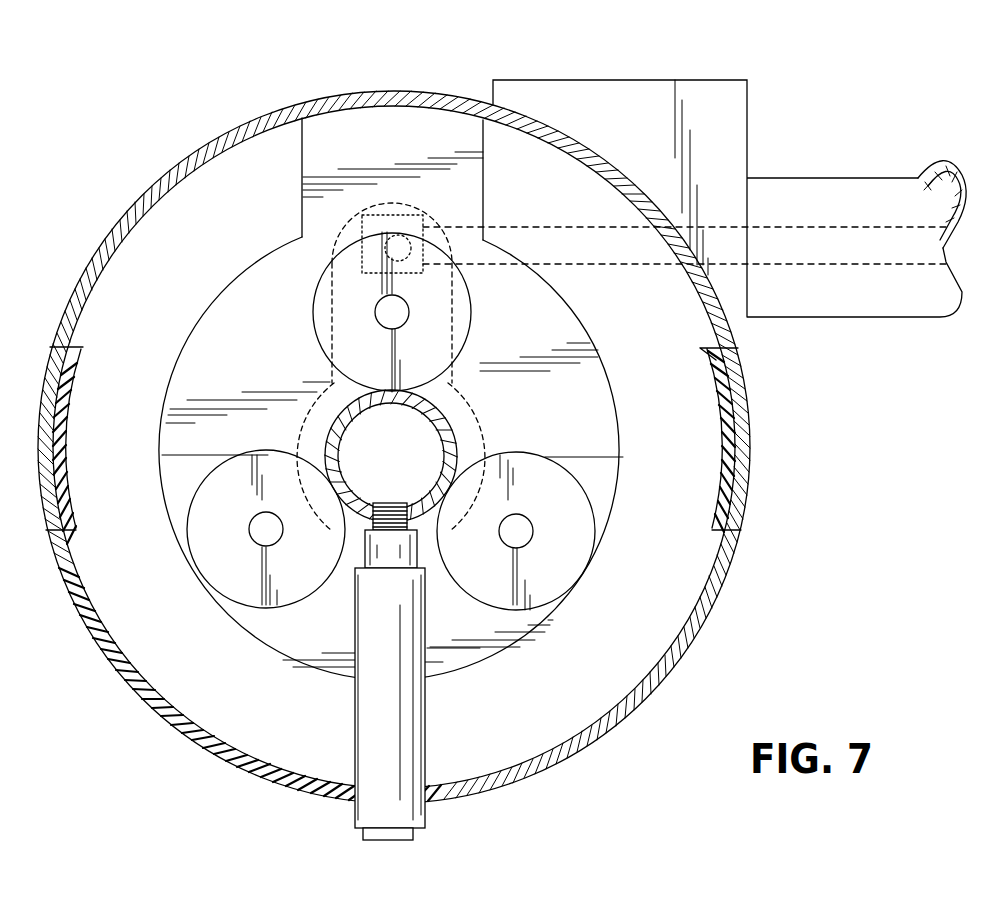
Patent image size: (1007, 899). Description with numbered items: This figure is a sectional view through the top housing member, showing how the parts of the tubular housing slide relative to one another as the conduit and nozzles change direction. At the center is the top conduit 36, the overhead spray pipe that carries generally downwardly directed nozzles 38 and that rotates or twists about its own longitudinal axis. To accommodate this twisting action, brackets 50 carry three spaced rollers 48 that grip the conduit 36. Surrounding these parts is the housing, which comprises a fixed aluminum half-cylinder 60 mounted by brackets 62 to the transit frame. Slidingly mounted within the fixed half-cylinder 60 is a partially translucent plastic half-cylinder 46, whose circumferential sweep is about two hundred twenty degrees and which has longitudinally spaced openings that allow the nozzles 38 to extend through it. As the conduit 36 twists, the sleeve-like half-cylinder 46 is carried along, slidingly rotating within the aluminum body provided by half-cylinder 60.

The top conduit 36 is at (331, 428).
The nozzles 38 is at (428, 734).
The translucent half-cylinder 46 is at (208, 753).
The rollers 48 is at (345, 310).
The brackets 50 is at (550, 317).
The aluminum half-cylinder 60 is at (175, 167).
The brackets 62 is at (688, 80).